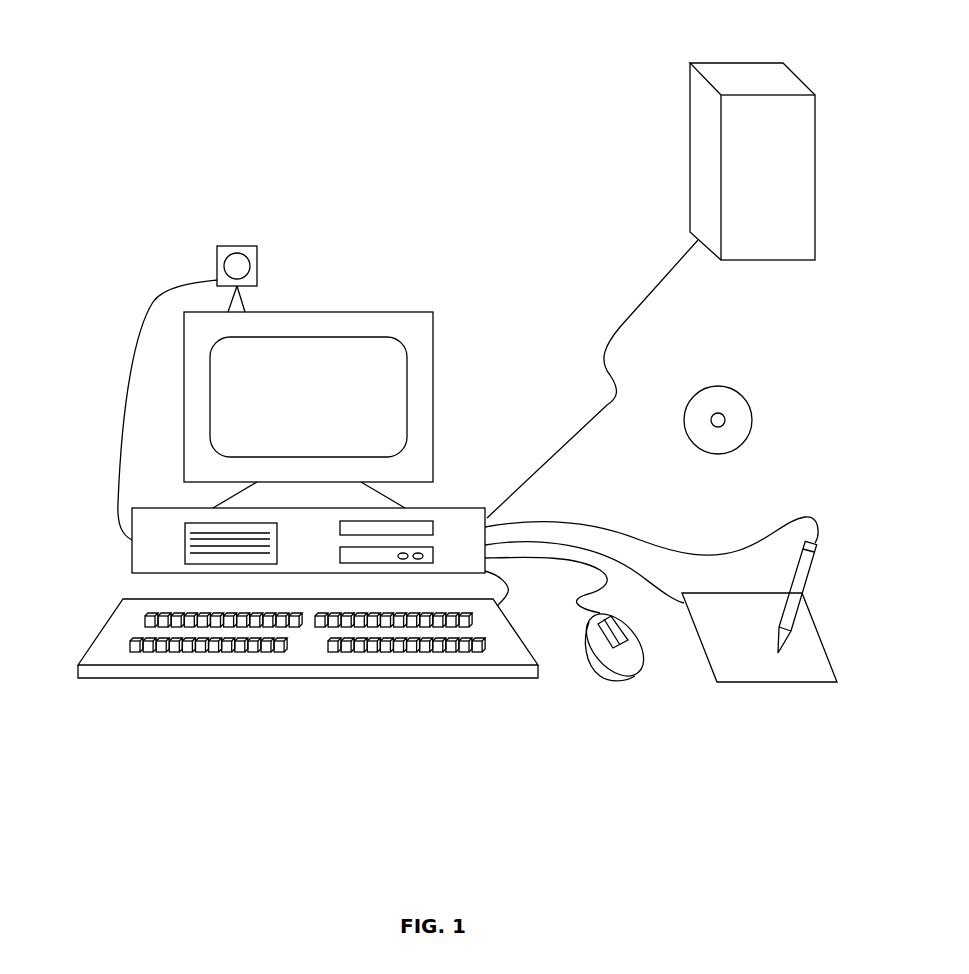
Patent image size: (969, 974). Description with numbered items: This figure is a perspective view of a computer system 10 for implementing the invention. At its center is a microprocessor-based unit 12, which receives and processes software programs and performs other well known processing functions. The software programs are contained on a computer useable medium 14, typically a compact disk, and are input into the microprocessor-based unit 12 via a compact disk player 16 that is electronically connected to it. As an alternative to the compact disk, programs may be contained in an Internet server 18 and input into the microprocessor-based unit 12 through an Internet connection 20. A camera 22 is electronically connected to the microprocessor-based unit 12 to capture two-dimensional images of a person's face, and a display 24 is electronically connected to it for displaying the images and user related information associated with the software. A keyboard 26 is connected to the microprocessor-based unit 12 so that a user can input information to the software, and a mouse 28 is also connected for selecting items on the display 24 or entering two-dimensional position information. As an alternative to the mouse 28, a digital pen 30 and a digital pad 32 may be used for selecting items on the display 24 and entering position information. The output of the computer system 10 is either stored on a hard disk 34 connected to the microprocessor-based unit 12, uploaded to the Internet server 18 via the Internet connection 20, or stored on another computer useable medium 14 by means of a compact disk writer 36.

The computer system 10 is at (445, 137).
The microprocessor-based unit 12 is at (430, 508).
The computer useable medium 14 is at (742, 407).
The compact disk player 16 is at (435, 528).
The Internet server 18 is at (690, 140).
The Internet connection 20 is at (622, 327).
The camera 22 is at (258, 257).
The display 24 is at (352, 345).
The keyboard 26 is at (105, 625).
The mouse 28 is at (637, 650).
The digital pen 30 is at (818, 558).
The digital pad 32 is at (820, 643).
The hard disk 34 is at (197, 523).
The compact disk writer 36 is at (435, 557).